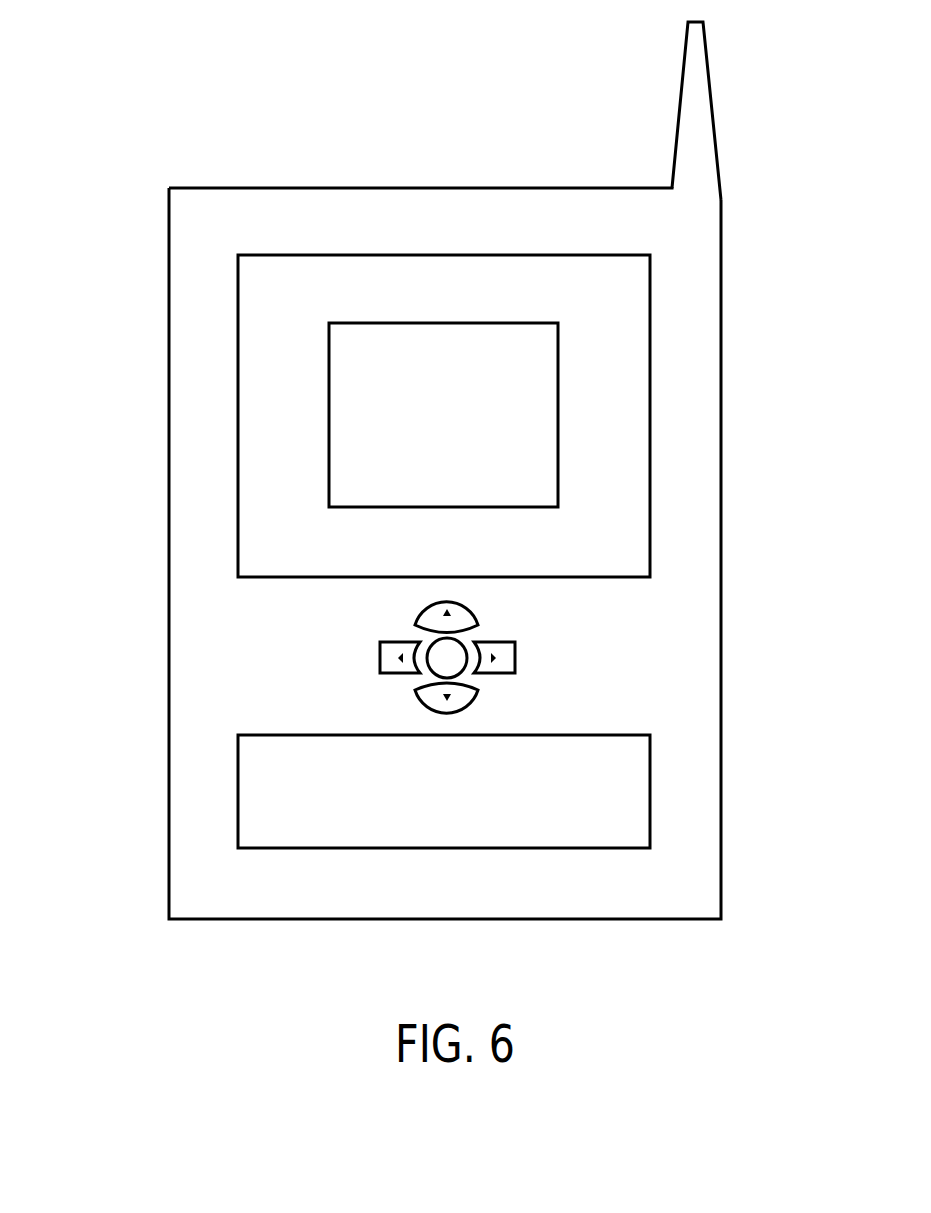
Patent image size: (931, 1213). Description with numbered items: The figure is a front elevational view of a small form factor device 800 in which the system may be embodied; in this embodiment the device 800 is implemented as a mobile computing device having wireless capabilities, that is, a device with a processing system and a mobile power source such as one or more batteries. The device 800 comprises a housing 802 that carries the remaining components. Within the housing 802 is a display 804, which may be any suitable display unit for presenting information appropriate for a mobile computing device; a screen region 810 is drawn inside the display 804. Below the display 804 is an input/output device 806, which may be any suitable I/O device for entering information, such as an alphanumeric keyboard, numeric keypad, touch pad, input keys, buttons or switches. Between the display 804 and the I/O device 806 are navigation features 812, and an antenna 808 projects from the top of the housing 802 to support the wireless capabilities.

The small form factor device 800 is at (172, 128).
The housing 802 is at (169, 645).
The display 804 is at (650, 313).
The input/output (I/O) device 806 is at (650, 792).
The antenna 808 is at (680, 104).
The display screen 810 is at (445, 323).
The navigation features 812 is at (547, 655).